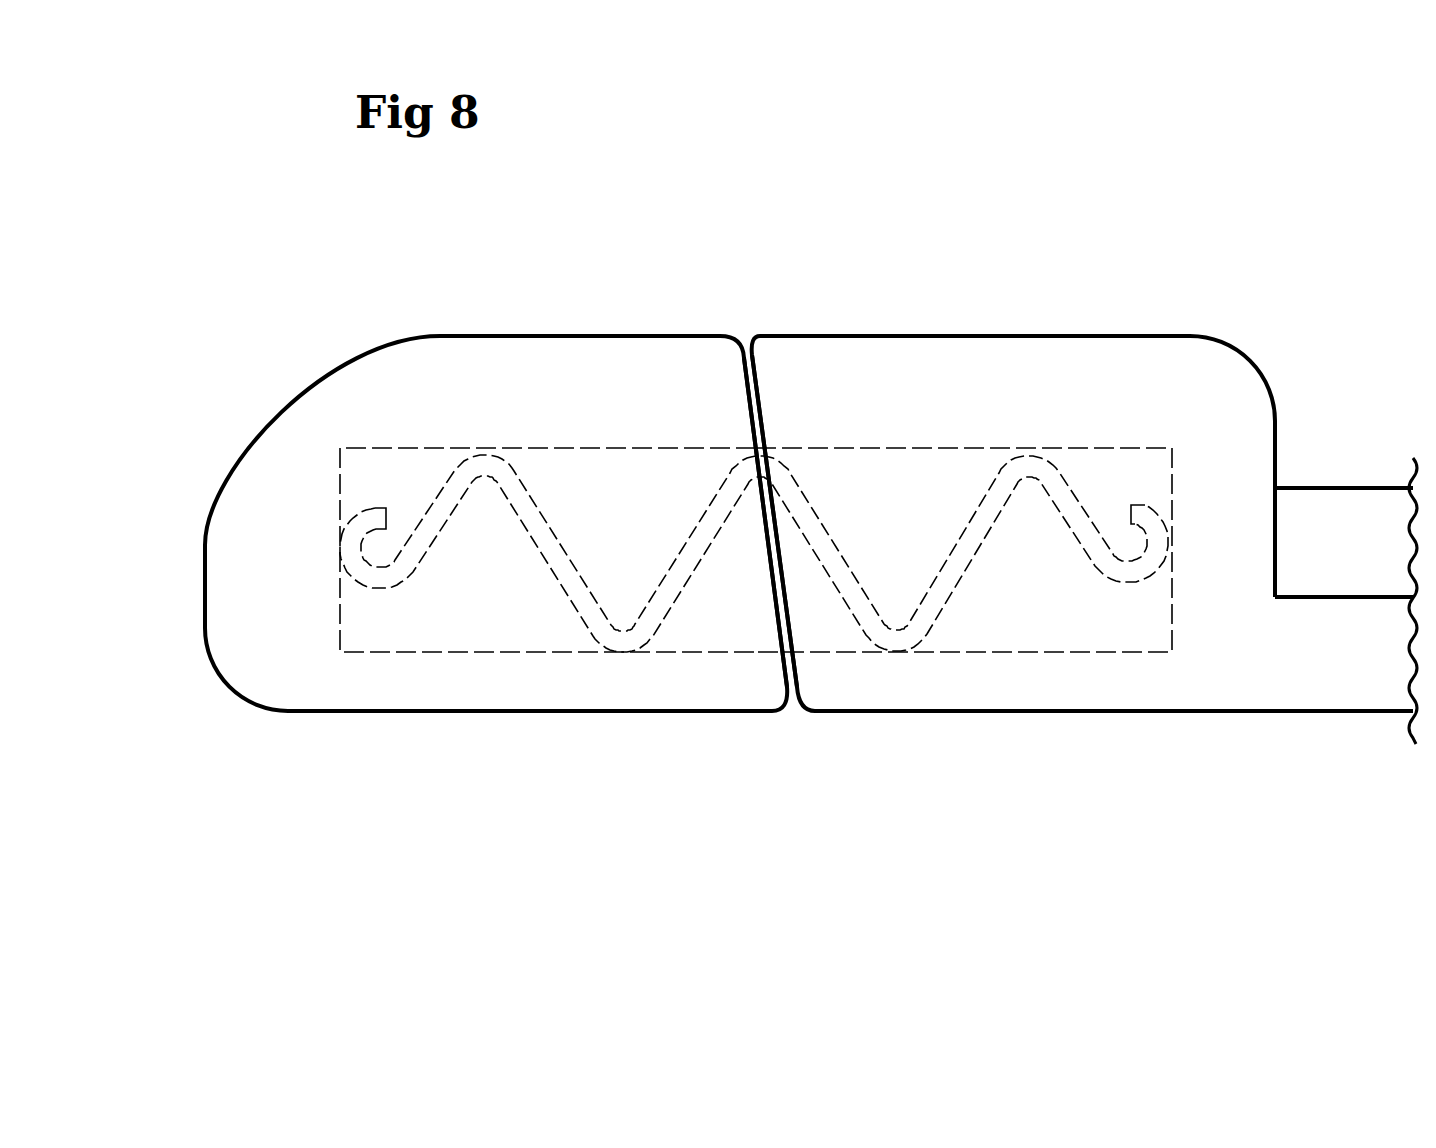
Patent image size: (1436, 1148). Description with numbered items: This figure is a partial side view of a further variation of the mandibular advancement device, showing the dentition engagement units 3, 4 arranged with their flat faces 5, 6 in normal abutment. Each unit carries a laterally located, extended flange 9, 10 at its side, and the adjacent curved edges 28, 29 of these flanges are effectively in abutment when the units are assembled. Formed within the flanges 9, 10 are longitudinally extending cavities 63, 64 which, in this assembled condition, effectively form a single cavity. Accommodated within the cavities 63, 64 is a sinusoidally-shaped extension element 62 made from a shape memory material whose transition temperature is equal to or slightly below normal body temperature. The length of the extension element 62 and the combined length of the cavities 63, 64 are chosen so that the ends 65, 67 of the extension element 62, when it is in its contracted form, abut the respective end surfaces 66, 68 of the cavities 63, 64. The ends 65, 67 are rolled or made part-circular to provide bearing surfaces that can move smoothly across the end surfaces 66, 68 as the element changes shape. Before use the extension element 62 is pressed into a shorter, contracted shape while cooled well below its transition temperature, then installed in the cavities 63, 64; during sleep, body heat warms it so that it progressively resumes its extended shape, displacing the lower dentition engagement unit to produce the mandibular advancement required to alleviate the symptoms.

The dentition engagement unit 3 is at (1325, 520).
The dentition engagement unit 4 is at (1312, 660).
The flat face 5 is at (1305, 623).
The flat face 6 is at (1362, 572).
The flange 9 is at (358, 410).
The flange 10 is at (1112, 382).
The curved edge 28 is at (754, 405).
The curved edge 29 is at (762, 397).
The extension element 62 is at (1068, 498).
The cavity 63 is at (452, 600).
The cavity 64 is at (1003, 572).
The end of extension element 65 is at (358, 530).
The end surface 66 is at (345, 625).
The end of extension element 67 is at (1152, 522).
The end surface 68 is at (1172, 603).